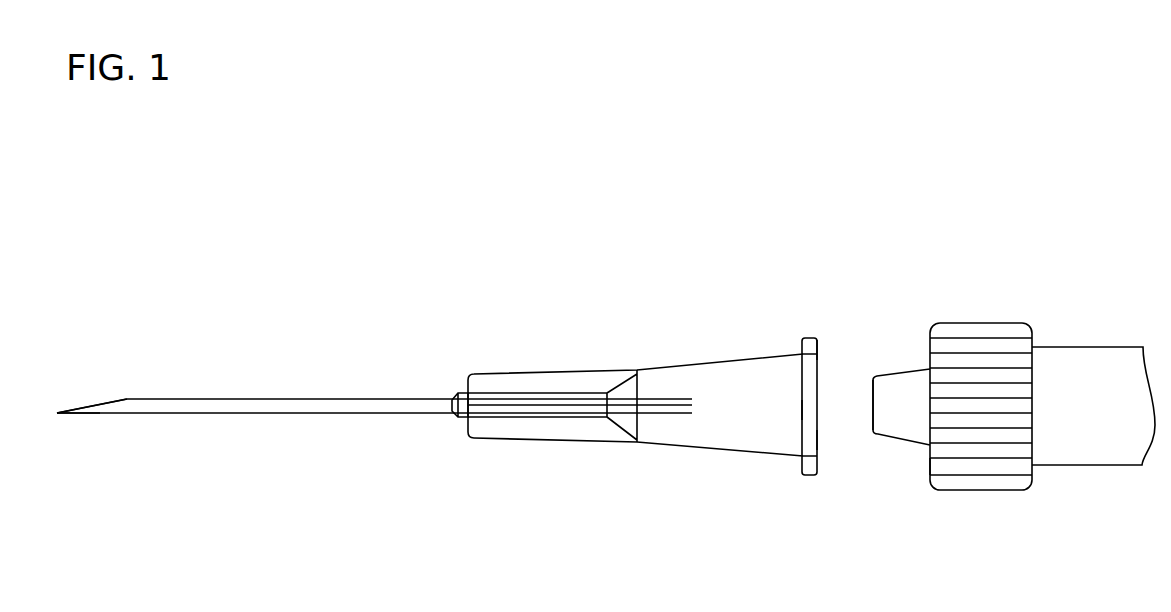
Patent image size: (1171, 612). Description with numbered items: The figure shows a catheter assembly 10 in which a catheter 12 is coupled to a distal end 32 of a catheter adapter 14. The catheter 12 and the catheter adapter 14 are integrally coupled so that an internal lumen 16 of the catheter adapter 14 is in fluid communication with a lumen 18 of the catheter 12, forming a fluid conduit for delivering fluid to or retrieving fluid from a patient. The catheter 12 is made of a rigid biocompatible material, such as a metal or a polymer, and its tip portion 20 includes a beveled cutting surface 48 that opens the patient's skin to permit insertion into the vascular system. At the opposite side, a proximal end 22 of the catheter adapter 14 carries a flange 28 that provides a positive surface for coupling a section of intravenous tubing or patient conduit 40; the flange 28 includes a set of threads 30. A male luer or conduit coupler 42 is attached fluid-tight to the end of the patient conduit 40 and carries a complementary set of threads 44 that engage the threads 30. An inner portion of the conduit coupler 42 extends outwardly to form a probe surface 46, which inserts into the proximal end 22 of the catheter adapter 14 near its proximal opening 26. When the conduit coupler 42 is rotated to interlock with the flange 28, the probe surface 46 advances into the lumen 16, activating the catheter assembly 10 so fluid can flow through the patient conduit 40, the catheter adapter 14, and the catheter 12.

The catheter assembly 10 is at (708, 140).
The catheter 12 is at (311, 408).
The catheter adapter 14 is at (698, 380).
The internal lumen 16 is at (843, 328).
The lumen 18 is at (102, 366).
The tip portion 20 is at (101, 410).
The proximal end 22 is at (882, 260).
The proximal opening 26 is at (817, 440).
The flange 28 is at (797, 410).
The threads 30 is at (808, 338).
The distal end 32 is at (450, 395).
The intravenous tubing 40 is at (1086, 380).
The conduit coupler 42 is at (968, 345).
The threads 44 is at (916, 470).
The probe surface 46 is at (892, 422).
The beveled cutting surface 48 is at (96, 403).